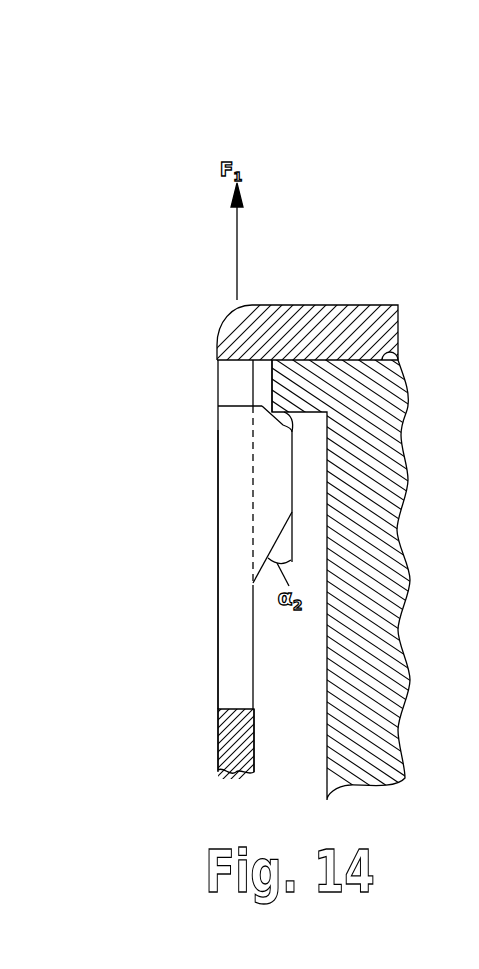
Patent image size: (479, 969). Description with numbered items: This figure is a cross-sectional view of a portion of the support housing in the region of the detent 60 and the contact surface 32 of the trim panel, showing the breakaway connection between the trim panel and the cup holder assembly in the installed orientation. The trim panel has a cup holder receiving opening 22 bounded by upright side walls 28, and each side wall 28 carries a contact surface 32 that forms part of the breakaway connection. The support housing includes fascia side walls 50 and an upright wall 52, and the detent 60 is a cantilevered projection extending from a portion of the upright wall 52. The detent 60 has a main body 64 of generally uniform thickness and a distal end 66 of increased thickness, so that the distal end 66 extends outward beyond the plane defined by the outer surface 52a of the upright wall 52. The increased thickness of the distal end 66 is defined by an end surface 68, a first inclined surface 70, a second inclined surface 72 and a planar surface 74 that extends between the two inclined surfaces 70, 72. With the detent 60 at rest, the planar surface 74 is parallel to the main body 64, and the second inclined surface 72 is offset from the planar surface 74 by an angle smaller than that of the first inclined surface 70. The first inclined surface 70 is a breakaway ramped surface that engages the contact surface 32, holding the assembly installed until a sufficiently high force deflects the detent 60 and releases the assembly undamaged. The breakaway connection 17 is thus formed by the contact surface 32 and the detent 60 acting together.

The latch assembly 17 is at (136, 434).
The cup holder receiving opening 22 is at (272, 385).
The upright side walls 28 is at (396, 344).
The contact surface 32 is at (288, 431).
The fascia side walls 50 is at (360, 318).
The upright wall 52 is at (218, 758).
The outer surface 52a is at (255, 738).
The detent 60 is at (190, 485).
The main body 64 is at (228, 642).
The distal end 66 is at (233, 522).
The end surface 68 is at (237, 406).
The first inclined surface 70 is at (284, 422).
The second inclined surface 72 is at (268, 563).
The planar surface 74 is at (292, 480).